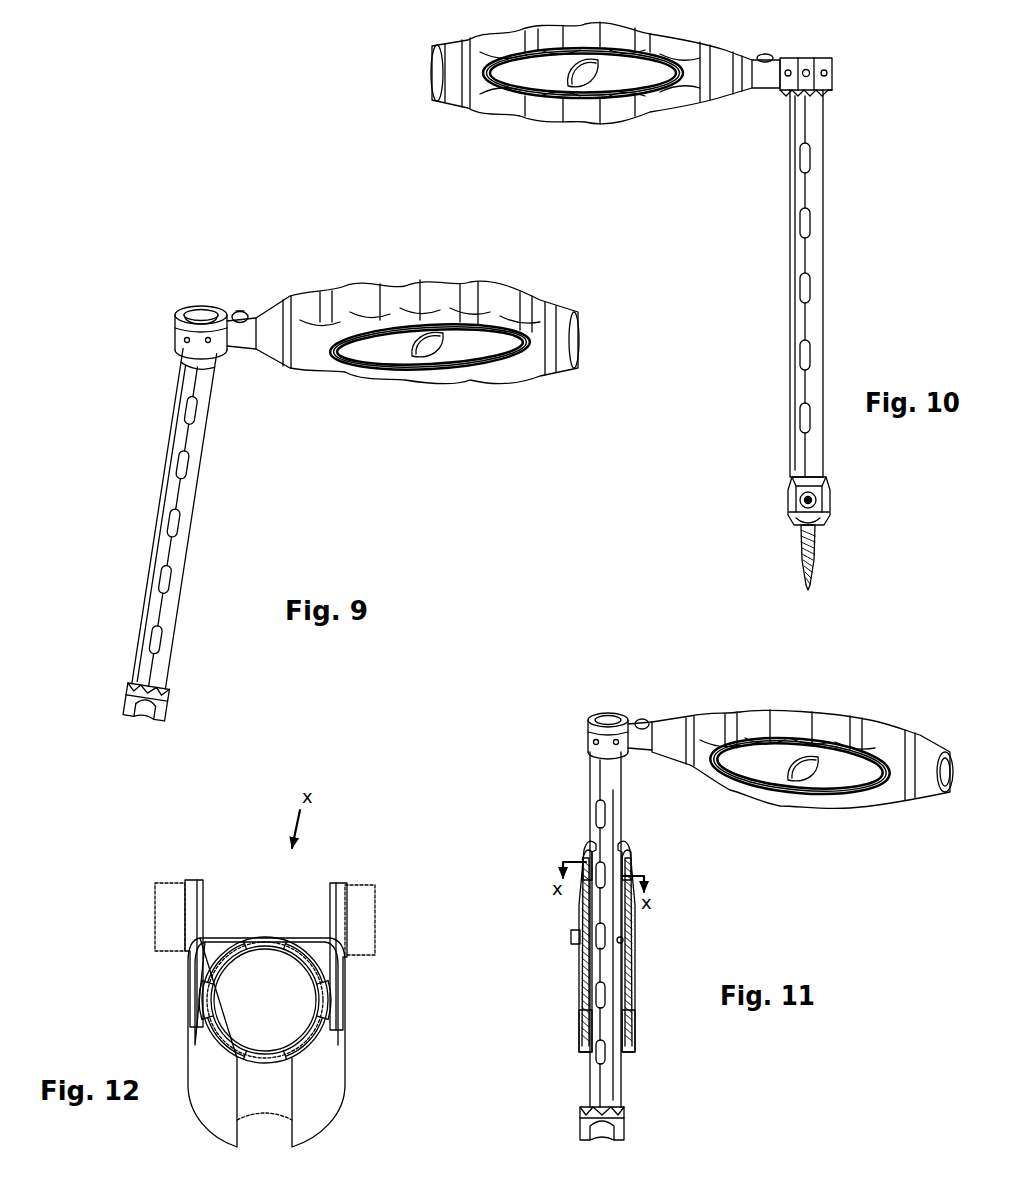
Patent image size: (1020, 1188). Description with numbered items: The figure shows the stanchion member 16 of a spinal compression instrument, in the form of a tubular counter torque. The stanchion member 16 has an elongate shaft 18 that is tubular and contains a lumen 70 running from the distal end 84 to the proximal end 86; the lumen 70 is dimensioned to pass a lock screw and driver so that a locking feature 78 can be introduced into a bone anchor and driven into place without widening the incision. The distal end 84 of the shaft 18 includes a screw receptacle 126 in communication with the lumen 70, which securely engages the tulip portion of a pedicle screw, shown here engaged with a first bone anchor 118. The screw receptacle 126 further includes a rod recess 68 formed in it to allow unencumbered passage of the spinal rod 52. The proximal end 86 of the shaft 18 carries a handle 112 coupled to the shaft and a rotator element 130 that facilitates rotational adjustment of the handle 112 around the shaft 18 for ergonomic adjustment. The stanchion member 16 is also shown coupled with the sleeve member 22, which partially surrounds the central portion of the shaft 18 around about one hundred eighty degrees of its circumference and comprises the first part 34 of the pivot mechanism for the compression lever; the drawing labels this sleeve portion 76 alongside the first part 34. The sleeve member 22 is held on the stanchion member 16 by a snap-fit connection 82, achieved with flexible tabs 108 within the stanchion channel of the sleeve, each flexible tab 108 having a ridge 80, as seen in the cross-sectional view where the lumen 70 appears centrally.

In FIG. 10, the stanchion member 16 is at (610, 207).
In FIG. 9, the stanchion member 16 is at (236, 481).
In FIG. 11, the stanchion member 16 is at (573, 766).
In FIG. 10, the elongate shaft 18 is at (820, 246).
In FIG. 9, the elongate shaft 18 is at (160, 490).
In FIG. 11, the elongate shaft 18 is at (594, 806).
In FIG. 12, the elongate shaft 18 is at (238, 944).
In FIG. 12, the sleeve member 22 is at (378, 1108).
In FIG. 11, the first part of pivot mechanism 34 is at (626, 946).
In FIG. 10, the spinal rod 52 is at (812, 500).
In FIG. 9, the rod recess 68 is at (153, 738).
In FIG. 12, the lumen 70 is at (265, 1000).
In FIG. 11, the arm 76 is at (622, 942).
In FIG. 12, the arm 76 is at (377, 886).
In FIG. 11, the locking feature 78 is at (590, 878).
In FIG. 12, the ridge 80 is at (205, 978).
In FIG. 11, the snap-fit connection 82 is at (584, 1030).
In FIG. 9, the distal end 84 is at (126, 704).
In FIG. 9, the proximal end 86 is at (170, 345).
In FIG. 12, the flexible tab 108 is at (202, 1001).
In FIG. 10, the handle 112 is at (446, 97).
In FIG. 9, the handle 112 is at (430, 300).
In FIG. 11, the handle 112 is at (752, 780).
In FIG. 10, the first bone anchor 118 is at (826, 521).
In FIG. 10, the screw receptacle 126 is at (792, 496).
In FIG. 9, the screw receptacle 126 is at (194, 717).
In FIG. 11, the screw receptacle 126 is at (632, 1124).
In FIG. 9, the rotator element 130 is at (186, 316).